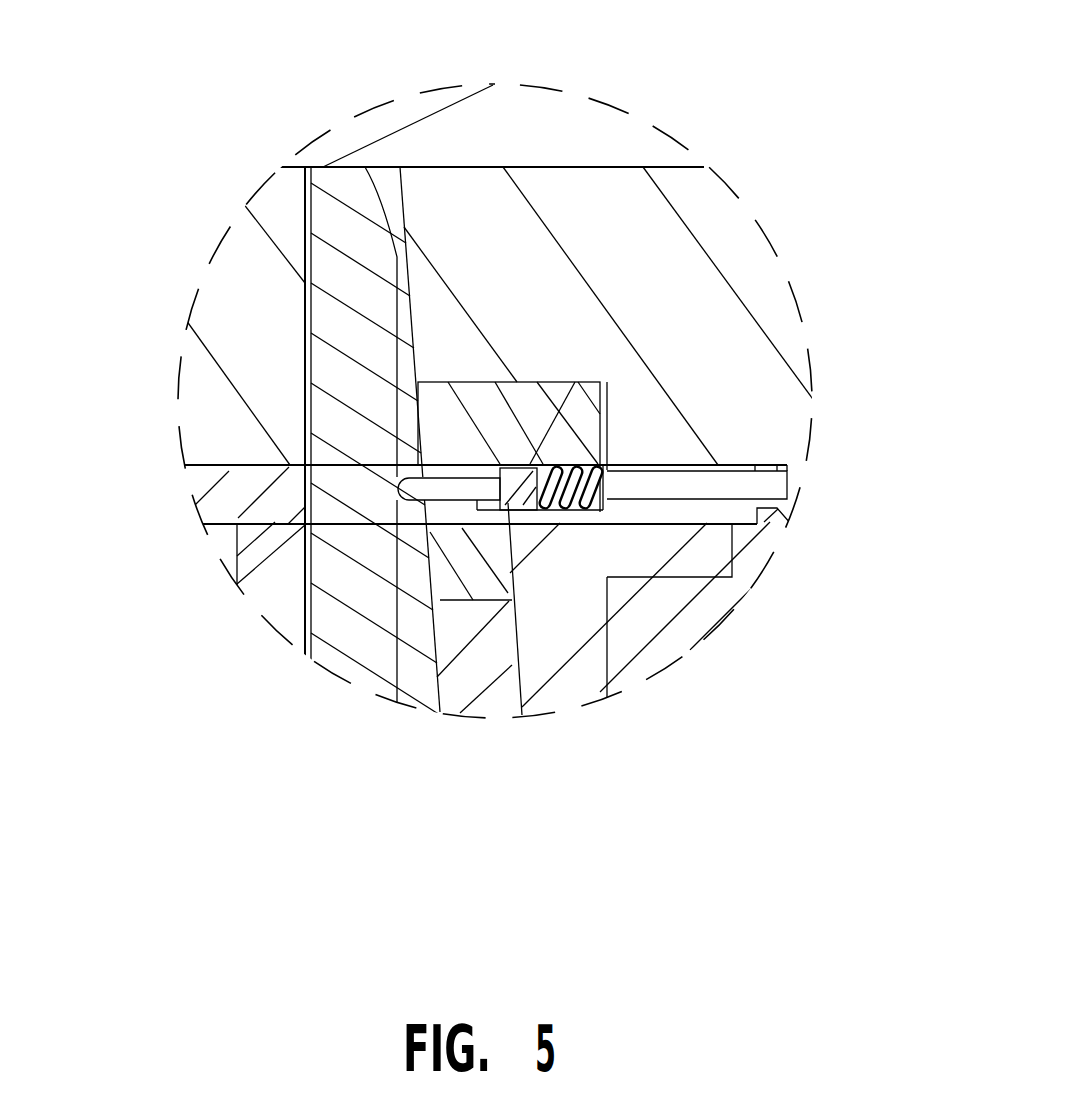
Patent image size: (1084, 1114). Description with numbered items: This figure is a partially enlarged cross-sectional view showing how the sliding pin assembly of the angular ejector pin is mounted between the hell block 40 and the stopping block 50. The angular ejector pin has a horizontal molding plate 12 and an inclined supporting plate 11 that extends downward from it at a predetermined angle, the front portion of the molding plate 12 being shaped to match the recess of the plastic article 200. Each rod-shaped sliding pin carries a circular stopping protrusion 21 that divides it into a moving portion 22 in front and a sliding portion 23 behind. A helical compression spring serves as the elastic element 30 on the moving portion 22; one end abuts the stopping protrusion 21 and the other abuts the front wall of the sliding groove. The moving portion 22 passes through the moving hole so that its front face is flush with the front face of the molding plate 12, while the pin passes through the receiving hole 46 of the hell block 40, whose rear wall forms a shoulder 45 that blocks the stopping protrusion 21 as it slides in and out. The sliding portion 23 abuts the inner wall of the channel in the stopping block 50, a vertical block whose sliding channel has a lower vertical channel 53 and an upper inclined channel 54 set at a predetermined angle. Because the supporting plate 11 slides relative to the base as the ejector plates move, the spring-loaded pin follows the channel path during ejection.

The supporting plate 11 is at (567, 640).
The molding plate 12 is at (640, 538).
The stopping protrusion 21 is at (575, 382).
The moving portion 22 is at (703, 487).
The sliding portion 23 is at (435, 488).
The elastic element 30 is at (600, 467).
The hell block 40 is at (547, 370).
The shoulder 45 is at (478, 504).
The receiving hole 46 is at (488, 510).
The stopping block 50 is at (288, 355).
The vertical channel 53 is at (440, 598).
The inclined channel 54 is at (407, 250).
The plastic article 200 is at (785, 530).